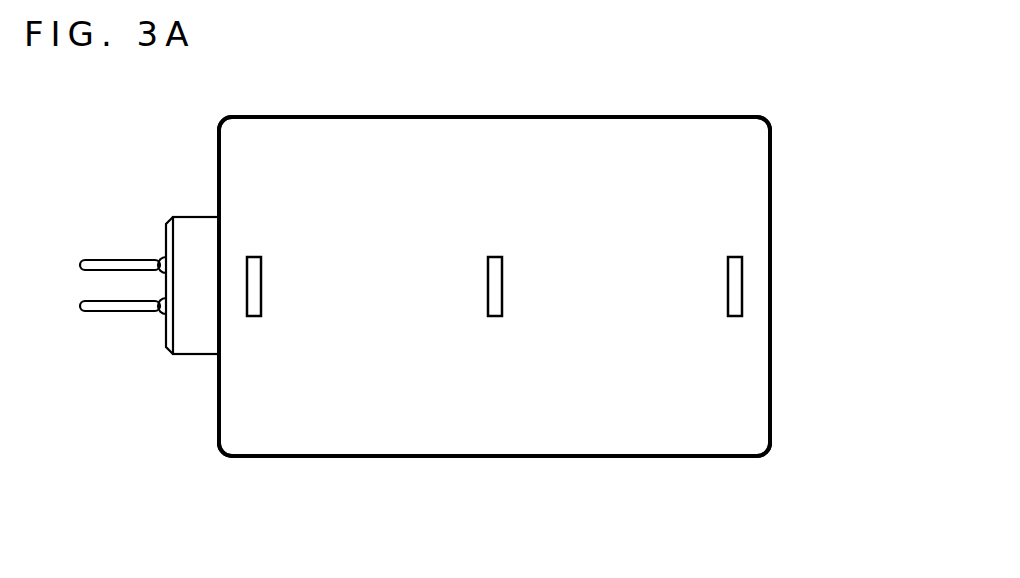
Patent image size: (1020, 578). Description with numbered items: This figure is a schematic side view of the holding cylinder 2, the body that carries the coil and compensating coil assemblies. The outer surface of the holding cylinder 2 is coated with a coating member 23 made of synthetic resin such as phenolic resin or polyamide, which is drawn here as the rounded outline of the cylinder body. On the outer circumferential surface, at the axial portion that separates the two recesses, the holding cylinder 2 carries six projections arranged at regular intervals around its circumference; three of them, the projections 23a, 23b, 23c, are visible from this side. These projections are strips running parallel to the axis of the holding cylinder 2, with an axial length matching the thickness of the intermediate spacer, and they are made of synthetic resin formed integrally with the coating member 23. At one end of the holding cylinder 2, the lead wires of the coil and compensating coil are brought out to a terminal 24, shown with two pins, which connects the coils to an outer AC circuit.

The holding cylinder 2 is at (186, 128).
The coating member 23 is at (770, 190).
The projection 23a is at (253, 316).
The projection 23b is at (494, 316).
The projection 23c is at (735, 316).
The terminal 24 is at (134, 313).